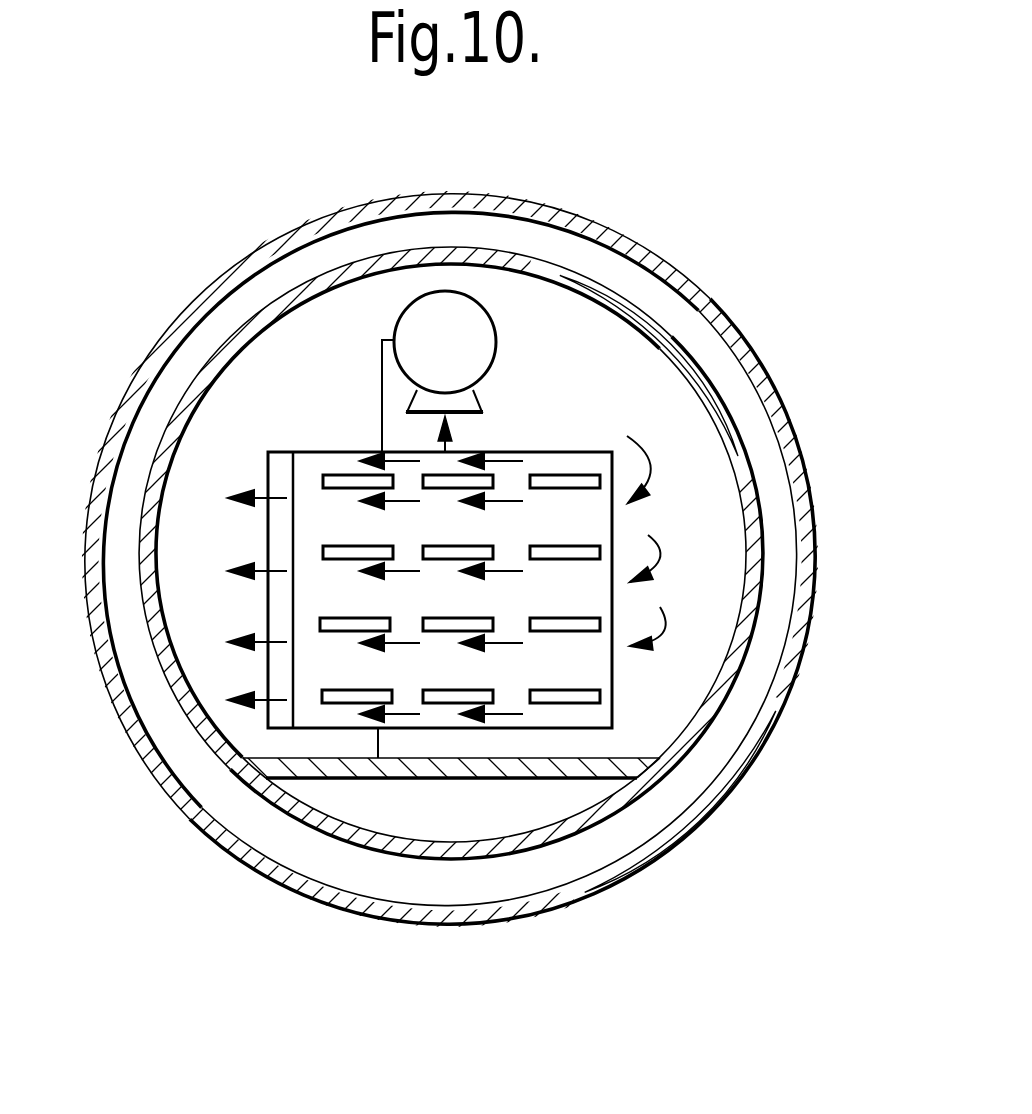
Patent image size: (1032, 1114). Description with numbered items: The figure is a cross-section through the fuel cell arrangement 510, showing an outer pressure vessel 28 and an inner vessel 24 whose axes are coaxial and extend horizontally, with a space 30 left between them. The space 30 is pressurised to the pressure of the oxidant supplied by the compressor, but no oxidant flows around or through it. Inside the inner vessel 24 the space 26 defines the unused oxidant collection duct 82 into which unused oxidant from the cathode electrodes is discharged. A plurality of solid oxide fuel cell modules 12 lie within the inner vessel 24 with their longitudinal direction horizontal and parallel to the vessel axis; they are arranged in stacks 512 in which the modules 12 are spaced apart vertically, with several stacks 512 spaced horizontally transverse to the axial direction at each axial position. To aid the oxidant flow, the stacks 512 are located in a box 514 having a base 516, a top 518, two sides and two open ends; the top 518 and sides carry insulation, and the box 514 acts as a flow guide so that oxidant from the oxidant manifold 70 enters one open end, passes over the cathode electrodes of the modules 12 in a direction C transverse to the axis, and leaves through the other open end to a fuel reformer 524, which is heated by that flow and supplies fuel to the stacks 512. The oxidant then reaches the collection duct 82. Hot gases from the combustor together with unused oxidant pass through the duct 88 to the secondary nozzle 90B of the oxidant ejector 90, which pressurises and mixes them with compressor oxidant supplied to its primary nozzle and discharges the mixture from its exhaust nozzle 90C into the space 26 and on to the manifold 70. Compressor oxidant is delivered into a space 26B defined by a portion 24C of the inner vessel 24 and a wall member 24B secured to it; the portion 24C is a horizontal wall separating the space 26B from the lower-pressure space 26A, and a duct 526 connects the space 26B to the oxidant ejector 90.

The solid oxide fuel cell module 12 is at (352, 490).
The inner vessel 24 is at (693, 352).
The wall member 24B is at (487, 858).
The portion of the inner vessel 24C is at (677, 850).
The space within the inner vessel 26 is at (730, 486).
The space in the inner vessel 26A is at (708, 607).
The space 26B is at (548, 844).
The outer pressure vessel 28 is at (652, 262).
The space between the inner vessel and the outer pressure vessel 30 is at (750, 413).
The oxidant manifold 70 is at (729, 558).
The unused oxidant collection duct 82 is at (185, 550).
The duct 88 is at (448, 421).
The oxidant ejector 90 is at (462, 291).
The secondary nozzle 90B is at (412, 397).
The exhaust nozzle 90C is at (497, 325).
The fuel cell arrangement 510 is at (770, 260).
The stack 512 is at (342, 703).
The box 514 is at (582, 733).
The base 516 is at (422, 733).
The top 518 is at (360, 452).
The fuel reformer 524 is at (277, 702).
The duct 526 is at (382, 347).
The circulation direction C is at (528, 365).